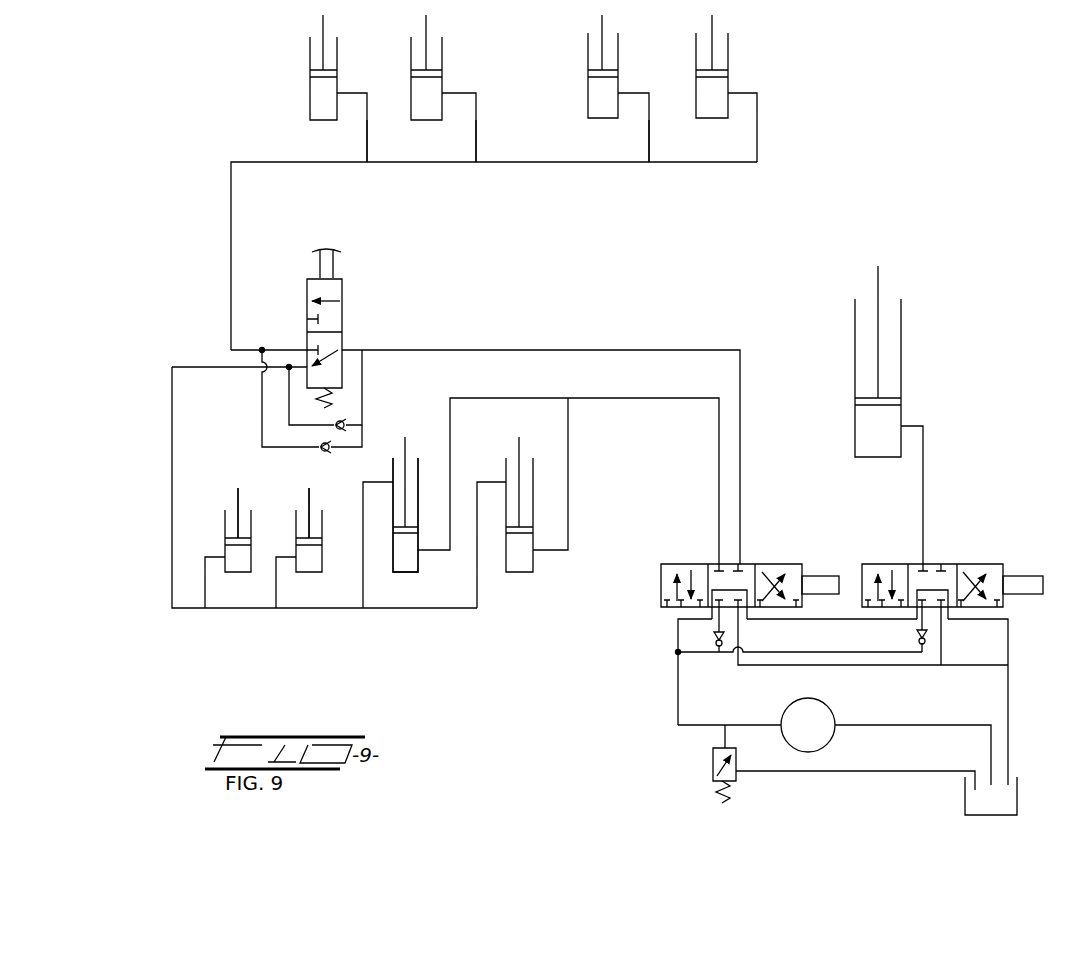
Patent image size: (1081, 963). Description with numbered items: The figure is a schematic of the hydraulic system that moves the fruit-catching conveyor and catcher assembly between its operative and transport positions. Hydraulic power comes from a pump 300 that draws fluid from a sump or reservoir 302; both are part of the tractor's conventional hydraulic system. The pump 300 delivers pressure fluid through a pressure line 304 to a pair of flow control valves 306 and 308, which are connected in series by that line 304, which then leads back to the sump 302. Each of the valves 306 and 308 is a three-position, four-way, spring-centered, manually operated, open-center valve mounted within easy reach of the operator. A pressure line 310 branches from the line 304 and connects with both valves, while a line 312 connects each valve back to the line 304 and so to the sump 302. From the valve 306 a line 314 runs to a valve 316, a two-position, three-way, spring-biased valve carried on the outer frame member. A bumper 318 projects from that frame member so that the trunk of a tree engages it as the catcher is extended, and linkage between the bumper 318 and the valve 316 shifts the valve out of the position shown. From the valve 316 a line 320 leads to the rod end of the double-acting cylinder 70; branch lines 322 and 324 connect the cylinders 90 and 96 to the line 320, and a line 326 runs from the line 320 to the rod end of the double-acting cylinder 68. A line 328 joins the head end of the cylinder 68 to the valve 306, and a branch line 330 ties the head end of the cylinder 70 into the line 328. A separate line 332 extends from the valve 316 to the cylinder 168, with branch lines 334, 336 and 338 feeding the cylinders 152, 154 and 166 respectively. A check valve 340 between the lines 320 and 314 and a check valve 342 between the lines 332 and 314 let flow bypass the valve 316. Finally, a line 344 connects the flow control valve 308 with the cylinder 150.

The double-acting cylinder 68 is at (418, 560).
The double-acting cylinder 70 is at (533, 565).
The cylinder 90 is at (225, 527).
The cylinder 96 is at (296, 527).
The cylinder 150 is at (901, 362).
The cylinder 152 is at (337, 57).
The cylinder 154 is at (442, 57).
The cylinder 166 is at (618, 57).
The cylinder 168 is at (728, 57).
The pump 300 is at (838, 712).
The sump or reservoir 302 is at (1017, 793).
The pressure line 304 is at (678, 690).
The flow control valve 306 is at (690, 560).
The flow control valve 308 is at (955, 562).
The pressure line 310 is at (795, 652).
The line 312 is at (824, 668).
The line 314 is at (580, 350).
The valve 316 is at (348, 326).
The bumper 318 is at (333, 248).
The line 320 is at (172, 440).
The branch line 322 is at (205, 597).
The branch line 324 is at (276, 605).
The line 326 is at (363, 595).
The line 328 is at (450, 398).
The branch line 330 is at (568, 505).
The line 332 is at (231, 242).
The branch line 334 is at (367, 143).
The branch line 336 is at (476, 128).
The branch line 338 is at (649, 144).
The check valve 340 is at (348, 423).
The check valve 342 is at (330, 452).
The line 344 is at (923, 485).